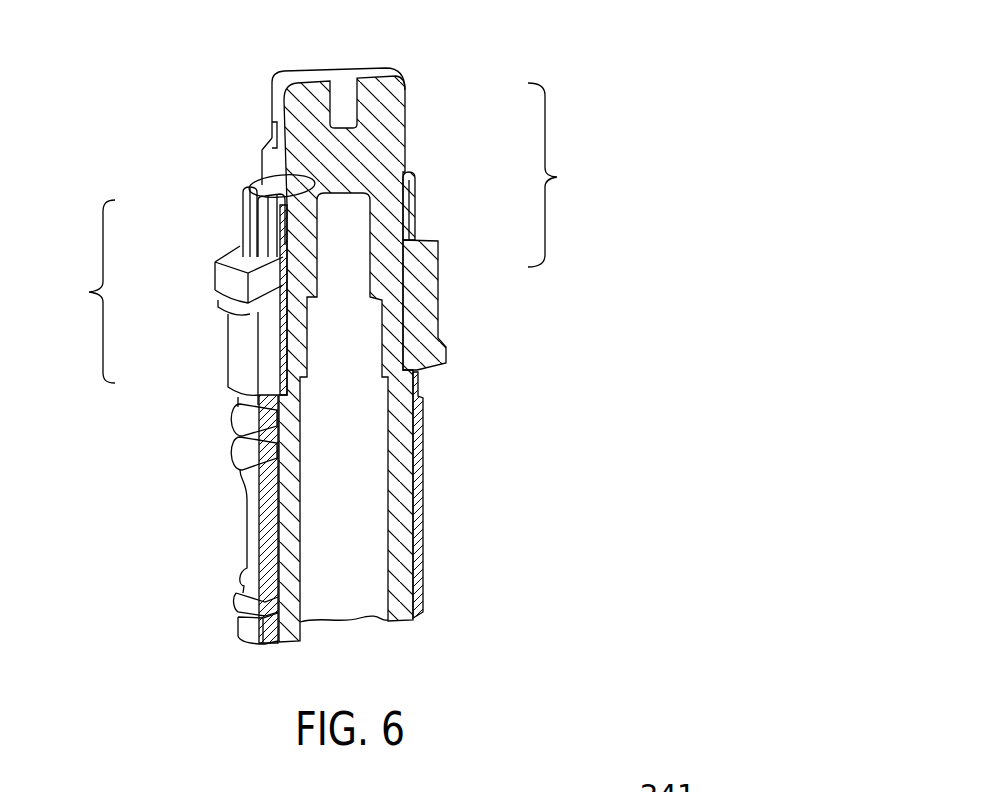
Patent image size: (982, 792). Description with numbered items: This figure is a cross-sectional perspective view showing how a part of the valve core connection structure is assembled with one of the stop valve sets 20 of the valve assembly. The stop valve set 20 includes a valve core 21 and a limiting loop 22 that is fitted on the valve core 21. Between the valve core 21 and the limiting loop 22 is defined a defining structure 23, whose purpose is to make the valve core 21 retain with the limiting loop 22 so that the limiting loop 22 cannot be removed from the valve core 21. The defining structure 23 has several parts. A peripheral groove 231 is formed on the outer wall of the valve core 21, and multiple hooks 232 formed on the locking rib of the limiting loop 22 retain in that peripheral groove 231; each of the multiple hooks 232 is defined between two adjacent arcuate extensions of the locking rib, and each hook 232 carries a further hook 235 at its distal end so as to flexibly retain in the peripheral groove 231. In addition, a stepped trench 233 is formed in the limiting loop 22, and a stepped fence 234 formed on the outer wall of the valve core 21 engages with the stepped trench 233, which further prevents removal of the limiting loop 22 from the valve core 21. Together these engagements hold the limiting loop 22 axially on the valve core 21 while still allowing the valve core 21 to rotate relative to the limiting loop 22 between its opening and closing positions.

The stop valve set 20 is at (561, 175).
The valve core 21 is at (406, 128).
The limiting loop 22 is at (438, 293).
The defining structure 23 is at (82, 291).
The peripheral groove 231 is at (252, 237).
The hooks 232 is at (272, 213).
The stepped trench 233 is at (262, 354).
The stepped fence 234 is at (218, 312).
The hook 235 is at (262, 175).